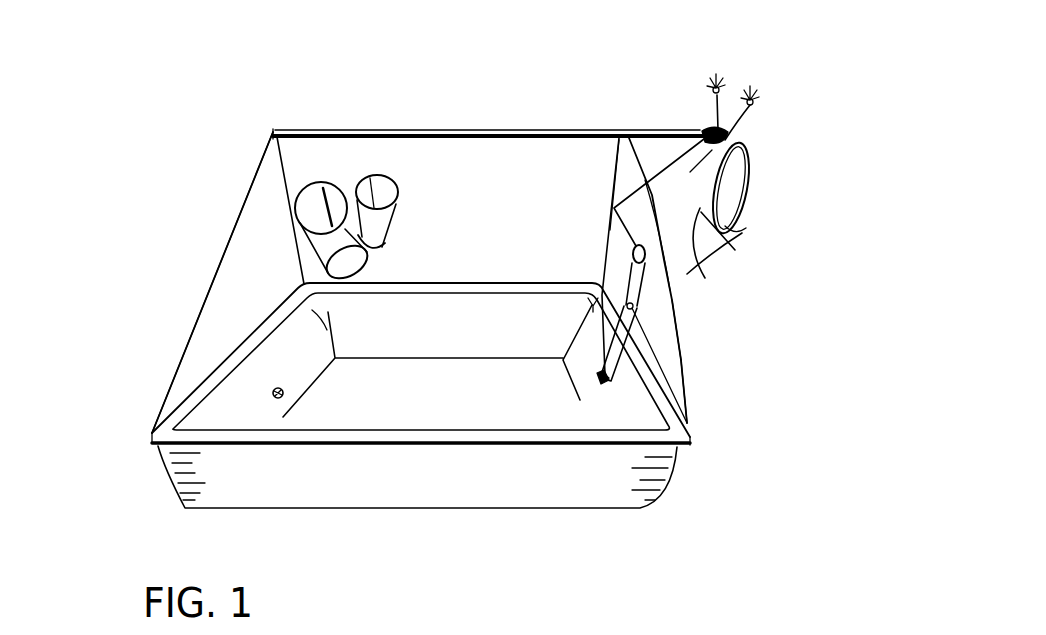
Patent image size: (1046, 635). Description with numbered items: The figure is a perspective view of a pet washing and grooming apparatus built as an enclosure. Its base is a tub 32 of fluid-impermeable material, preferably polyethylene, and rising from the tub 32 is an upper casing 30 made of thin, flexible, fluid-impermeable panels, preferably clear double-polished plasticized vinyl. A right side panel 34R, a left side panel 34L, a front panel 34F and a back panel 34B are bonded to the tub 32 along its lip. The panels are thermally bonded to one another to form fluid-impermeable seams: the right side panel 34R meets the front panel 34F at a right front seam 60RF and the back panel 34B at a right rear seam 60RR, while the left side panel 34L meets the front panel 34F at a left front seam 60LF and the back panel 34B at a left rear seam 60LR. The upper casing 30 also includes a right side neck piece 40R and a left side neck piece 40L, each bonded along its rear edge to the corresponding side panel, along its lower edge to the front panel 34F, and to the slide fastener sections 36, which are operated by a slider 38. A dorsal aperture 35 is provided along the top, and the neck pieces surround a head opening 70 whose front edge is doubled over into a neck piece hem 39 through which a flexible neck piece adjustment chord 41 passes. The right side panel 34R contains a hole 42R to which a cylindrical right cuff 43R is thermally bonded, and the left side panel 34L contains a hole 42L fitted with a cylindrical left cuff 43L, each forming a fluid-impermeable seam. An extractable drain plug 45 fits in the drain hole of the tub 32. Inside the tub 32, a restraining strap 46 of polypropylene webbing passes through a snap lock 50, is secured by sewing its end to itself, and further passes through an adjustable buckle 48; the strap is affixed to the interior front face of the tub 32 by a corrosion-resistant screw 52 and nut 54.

The upper casing 30 is at (550, 224).
The tub 32 is at (650, 487).
The back panel 34B is at (263, 195).
The front panel 34F is at (688, 263).
The left side panel 34L is at (486, 172).
The right side panel 34R is at (468, 240).
The dorsal aperture 35 is at (372, 126).
The slide fastener sections 36 is at (557, 137).
The slider 38 is at (697, 133).
The neck piece hem 39 is at (738, 232).
The left side neck piece 40L is at (748, 142).
The right side neck piece 40R is at (707, 250).
The neck piece adjustment chord 41 is at (728, 90).
The hole 42L is at (382, 195).
The hole 42R is at (312, 213).
The cylindrical left cuff 43L is at (343, 215).
The cylindrical right cuff 43R is at (318, 255).
The extractable drain plug 45 is at (283, 393).
The restraining strap 46 is at (690, 432).
The adjustable buckle 48 is at (688, 395).
The snap lock 50 is at (645, 260).
The screw 52 is at (607, 383).
The nut 54 is at (608, 380).
The left front seam 60LF is at (617, 133).
The left rear seam 60LR is at (270, 171).
The right front seam 60RF is at (683, 353).
The right rear seam 60RR is at (190, 335).
The head opening 70 is at (740, 185).